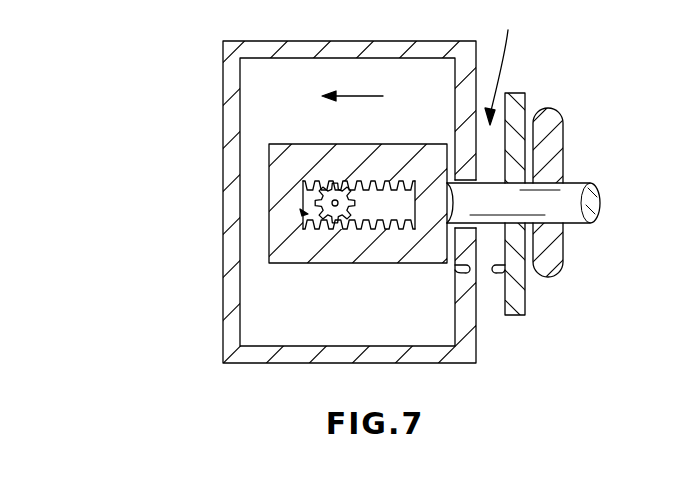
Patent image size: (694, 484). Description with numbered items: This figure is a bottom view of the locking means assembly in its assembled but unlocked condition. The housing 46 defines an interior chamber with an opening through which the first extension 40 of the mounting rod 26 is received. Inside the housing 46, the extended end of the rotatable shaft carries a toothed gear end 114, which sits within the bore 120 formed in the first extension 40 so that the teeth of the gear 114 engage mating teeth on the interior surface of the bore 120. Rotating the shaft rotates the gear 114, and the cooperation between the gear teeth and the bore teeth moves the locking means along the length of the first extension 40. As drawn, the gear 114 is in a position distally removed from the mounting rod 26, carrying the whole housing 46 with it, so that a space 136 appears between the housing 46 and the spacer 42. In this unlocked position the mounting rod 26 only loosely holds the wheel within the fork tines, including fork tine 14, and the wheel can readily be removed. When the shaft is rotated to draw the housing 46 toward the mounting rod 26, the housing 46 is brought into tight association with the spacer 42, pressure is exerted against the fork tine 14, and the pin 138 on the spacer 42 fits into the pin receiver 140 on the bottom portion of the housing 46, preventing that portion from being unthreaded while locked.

The housing 46 is at (223, 74).
The first extension 40 is at (325, 255).
The bore 120 is at (308, 214).
The toothed gear end 114 is at (328, 200).
The mounting rod 26 is at (574, 208).
The spacer 42 is at (518, 102).
The fork tine 14 is at (550, 128).
The space 136 is at (504, 67).
The pin receiver 140 is at (460, 275).
The pin 138 is at (497, 276).